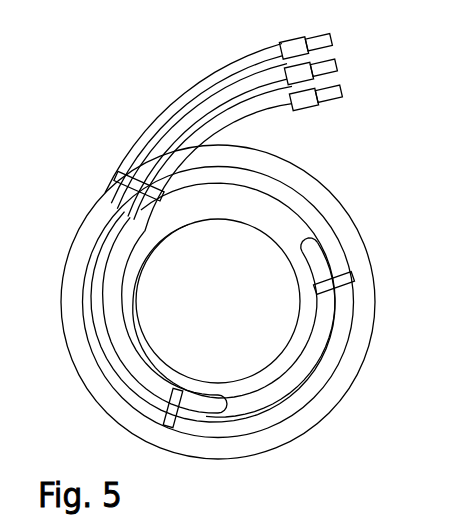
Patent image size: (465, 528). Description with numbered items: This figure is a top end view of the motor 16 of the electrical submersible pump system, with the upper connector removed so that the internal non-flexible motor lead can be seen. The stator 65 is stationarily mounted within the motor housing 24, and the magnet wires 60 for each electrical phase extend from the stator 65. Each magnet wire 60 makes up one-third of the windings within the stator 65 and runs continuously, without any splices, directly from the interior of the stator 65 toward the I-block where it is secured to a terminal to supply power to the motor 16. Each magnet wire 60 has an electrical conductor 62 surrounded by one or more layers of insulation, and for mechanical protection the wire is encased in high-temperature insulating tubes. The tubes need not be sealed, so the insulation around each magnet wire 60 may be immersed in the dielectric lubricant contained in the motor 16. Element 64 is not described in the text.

The motor 16 is at (343, 403).
The motor housing 24 is at (107, 398).
The magnet wire 60 is at (186, 131).
The electrical conductor 62 is at (334, 105).
The lead wire 64 is at (232, 58).
The stator 65 is at (290, 233).